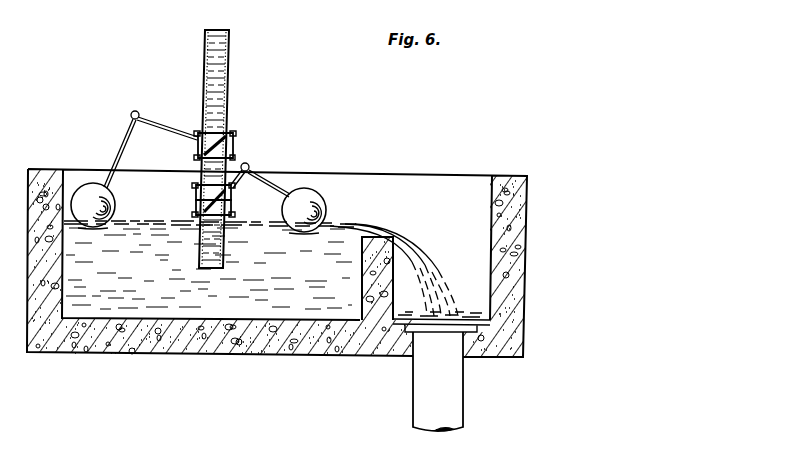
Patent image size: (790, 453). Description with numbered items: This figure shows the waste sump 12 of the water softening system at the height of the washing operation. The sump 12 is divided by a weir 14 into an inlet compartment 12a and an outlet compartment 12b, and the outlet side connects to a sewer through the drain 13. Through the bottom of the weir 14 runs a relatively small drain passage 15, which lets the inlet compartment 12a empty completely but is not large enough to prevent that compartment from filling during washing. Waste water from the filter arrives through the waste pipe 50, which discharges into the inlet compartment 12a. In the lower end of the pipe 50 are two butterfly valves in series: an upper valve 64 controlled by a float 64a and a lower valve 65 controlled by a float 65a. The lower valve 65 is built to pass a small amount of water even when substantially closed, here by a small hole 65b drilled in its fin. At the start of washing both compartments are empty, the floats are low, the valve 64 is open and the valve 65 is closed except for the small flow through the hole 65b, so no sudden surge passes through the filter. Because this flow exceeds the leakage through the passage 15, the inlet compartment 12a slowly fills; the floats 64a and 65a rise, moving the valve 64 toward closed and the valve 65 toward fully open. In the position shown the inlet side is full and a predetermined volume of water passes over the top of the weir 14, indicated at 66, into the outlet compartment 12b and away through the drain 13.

The waste sump 12 is at (524, 241).
The inlet compartment 12a is at (208, 305).
The outlet compartment 12b is at (441, 299).
The drain 13 is at (452, 390).
The weir 14 is at (394, 242).
The drain passage 15 is at (372, 343).
The waste pipe 50 is at (224, 58).
The first valve 64 is at (234, 143).
The float 64a is at (114, 198).
The second valve 65 is at (232, 195).
The float 65a is at (328, 204).
The small hole 65b is at (203, 208).
The flow over the weir 66 is at (378, 225).